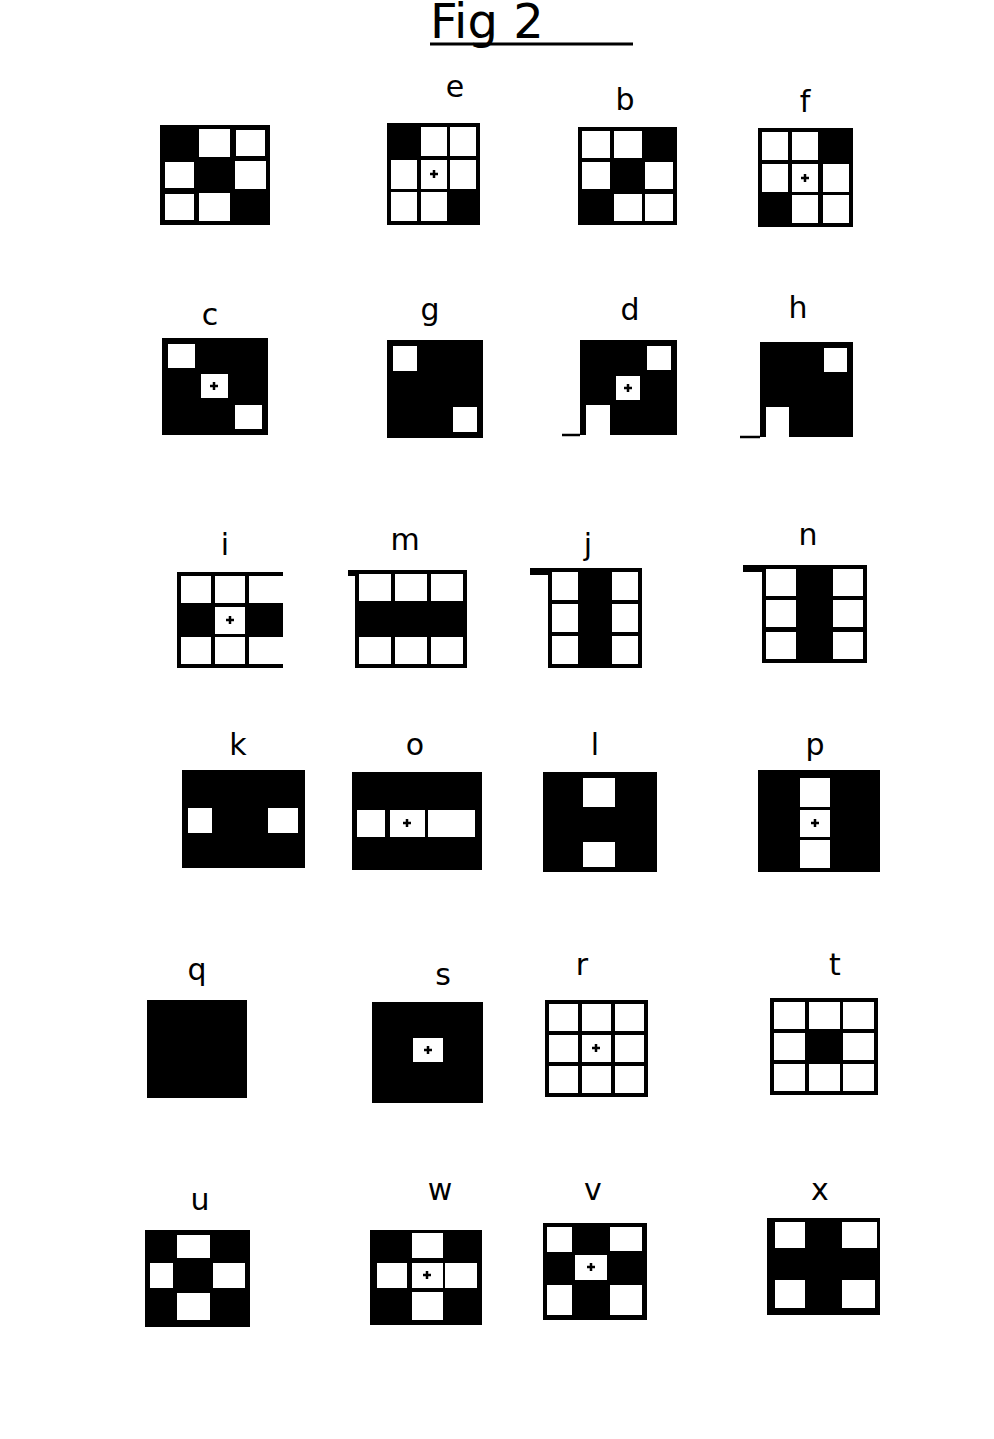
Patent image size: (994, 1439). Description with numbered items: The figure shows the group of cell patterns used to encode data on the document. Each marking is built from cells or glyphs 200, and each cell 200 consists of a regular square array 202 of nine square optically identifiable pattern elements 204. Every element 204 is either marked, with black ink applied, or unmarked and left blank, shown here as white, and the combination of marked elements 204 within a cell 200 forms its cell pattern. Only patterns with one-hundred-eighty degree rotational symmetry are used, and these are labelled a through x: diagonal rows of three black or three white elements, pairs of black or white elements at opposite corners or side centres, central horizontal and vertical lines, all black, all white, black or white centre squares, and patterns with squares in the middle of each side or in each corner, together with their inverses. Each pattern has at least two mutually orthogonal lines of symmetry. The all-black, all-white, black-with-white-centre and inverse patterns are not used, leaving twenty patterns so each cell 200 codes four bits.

The cell 200 is at (272, 184).
The regular square array 202 is at (245, 122).
The pattern element 204 is at (180, 178).